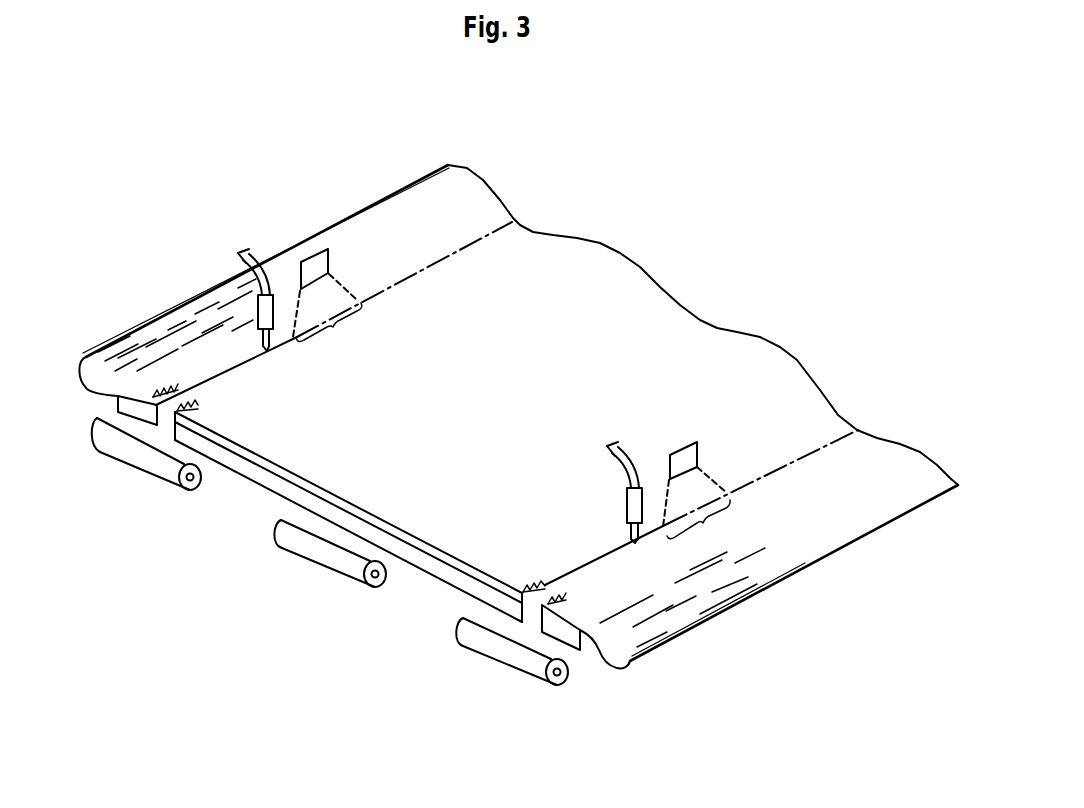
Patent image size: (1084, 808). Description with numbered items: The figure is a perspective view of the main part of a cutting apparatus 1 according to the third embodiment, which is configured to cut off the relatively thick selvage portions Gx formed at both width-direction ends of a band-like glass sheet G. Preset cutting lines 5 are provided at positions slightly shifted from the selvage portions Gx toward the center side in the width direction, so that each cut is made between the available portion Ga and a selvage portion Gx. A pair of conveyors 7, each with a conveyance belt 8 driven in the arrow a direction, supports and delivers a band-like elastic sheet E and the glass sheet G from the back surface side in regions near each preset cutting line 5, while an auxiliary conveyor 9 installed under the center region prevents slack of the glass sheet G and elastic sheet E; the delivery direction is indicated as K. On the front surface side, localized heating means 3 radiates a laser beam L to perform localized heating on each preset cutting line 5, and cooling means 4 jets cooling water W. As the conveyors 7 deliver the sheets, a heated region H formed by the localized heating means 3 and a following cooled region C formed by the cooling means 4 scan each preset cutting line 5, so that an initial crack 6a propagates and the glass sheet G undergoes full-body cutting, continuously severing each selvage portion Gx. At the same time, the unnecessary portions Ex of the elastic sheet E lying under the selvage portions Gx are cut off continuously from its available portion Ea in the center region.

The cutting apparatus 1 is at (660, 190).
The localized heating means 3 is at (322, 246).
The cooling means 4 is at (274, 291).
The preset cutting line 5 is at (463, 247).
The initial crack 6a is at (168, 390).
The conveyor 7 is at (209, 470).
The conveyance belt 8 is at (108, 428).
The auxiliary conveyor 9 is at (397, 563).
The band-like glass sheet G is at (600, 310).
The available portion Ga is at (650, 337).
The selvage portion Gx is at (150, 334).
The laser beam L is at (347, 283).
The heated region H is at (513, 421).
The cooling water W is at (264, 348).
The cooled region C is at (270, 352).
The band-like elastic sheet E is at (280, 483).
The available portion of elastic sheet Ea is at (364, 532).
The unnecessary portion of elastic sheet Ex is at (117, 400).
The conveying direction K is at (166, 427).
The arrow direction a is at (128, 459).